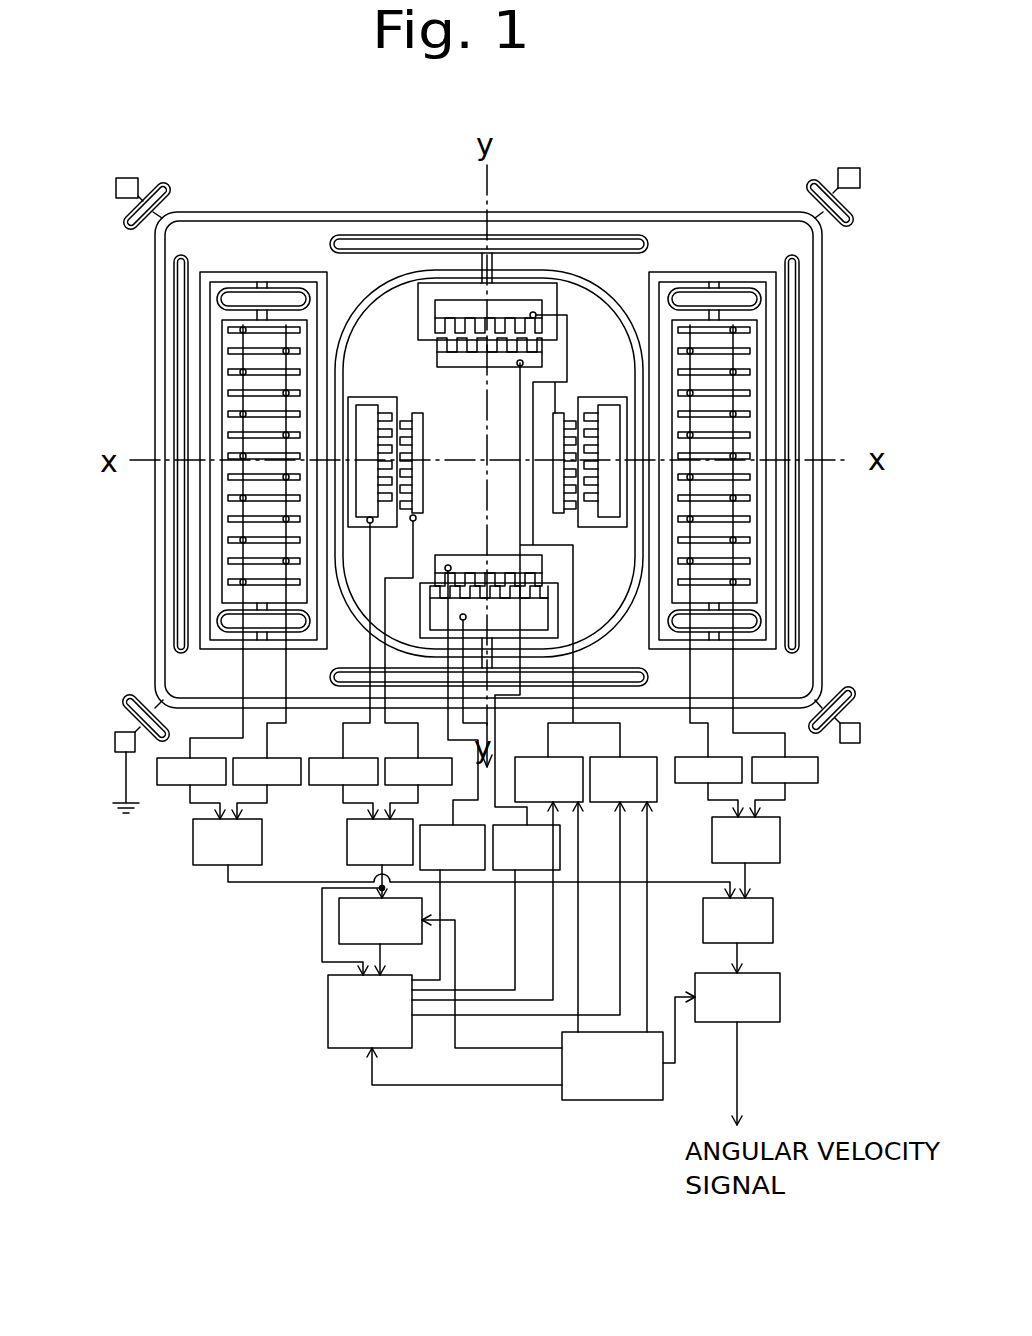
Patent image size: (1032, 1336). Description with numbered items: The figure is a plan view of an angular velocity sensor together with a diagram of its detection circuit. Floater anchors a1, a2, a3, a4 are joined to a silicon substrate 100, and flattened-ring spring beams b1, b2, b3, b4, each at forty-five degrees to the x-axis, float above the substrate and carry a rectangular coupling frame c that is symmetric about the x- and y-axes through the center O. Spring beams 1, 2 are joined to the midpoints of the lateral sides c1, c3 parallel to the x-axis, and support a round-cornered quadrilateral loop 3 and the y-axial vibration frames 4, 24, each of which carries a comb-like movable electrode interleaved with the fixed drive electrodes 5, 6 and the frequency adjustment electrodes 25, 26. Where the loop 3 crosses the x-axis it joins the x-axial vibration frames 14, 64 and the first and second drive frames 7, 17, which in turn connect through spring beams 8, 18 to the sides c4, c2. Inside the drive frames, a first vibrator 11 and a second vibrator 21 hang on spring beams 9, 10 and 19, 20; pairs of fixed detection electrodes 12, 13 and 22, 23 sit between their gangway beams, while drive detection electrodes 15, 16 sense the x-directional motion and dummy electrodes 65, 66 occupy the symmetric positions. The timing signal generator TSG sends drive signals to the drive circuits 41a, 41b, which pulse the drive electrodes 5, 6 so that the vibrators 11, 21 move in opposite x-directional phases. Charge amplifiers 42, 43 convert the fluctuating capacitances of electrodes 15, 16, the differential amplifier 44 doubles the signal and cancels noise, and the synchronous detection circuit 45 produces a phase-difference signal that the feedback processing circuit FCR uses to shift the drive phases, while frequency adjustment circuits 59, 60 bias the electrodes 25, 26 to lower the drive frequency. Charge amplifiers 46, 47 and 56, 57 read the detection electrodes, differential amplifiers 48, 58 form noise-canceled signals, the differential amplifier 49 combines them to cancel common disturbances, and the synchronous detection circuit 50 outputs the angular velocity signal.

The spring beam 1 is at (640, 228).
The silicon substrate 100 is at (178, 668).
The spring beam 2 is at (614, 669).
The quadrilateral loop 3 is at (384, 274).
The y-axial vibration frame 4 is at (552, 300).
The drive electrode 5 is at (440, 300).
The drive electrode 6 is at (487, 345).
The first drive frame 7 is at (698, 286).
The spring beam 8 is at (800, 266).
The spring beam 9 is at (740, 292).
The spring beam 10 is at (752, 612).
The first vibrator 11 is at (670, 322).
The fixed detection electrode 12 is at (740, 376).
The fixed detection electrode 13 is at (746, 356).
The x-axial vibration frame 14 is at (397, 406).
The drive detection electrode 15 is at (423, 425).
The drive detection electrode 16 is at (358, 397).
The second drive frame 17 is at (275, 282).
The spring beam 18 is at (178, 275).
The spring beam 19 is at (238, 294).
The spring beam 20 is at (232, 612).
The second vibrator 21 is at (303, 322).
The fixed detection electrode 22 is at (236, 380).
The fixed detection electrode 23 is at (234, 364).
The y-axial vibration frame 24 is at (424, 596).
The frequency adjustment electrode 25 is at (548, 620).
The frequency adjustment electrode 26 is at (542, 565).
The x-axial vibration frame 64 is at (560, 412).
The dummy electrode 65 is at (567, 340).
The dummy electrode 66 is at (607, 412).
The drive circuit 41a is at (622, 757).
The drive circuit 41b is at (560, 757).
The charge amplifier 42 is at (393, 786).
The charge amplifier 43 is at (326, 785).
The differential amplifier 44 is at (347, 847).
The synchronous detection circuit 45 is at (339, 930).
The charge amplifier 46 is at (805, 783).
The charge amplifier 47 is at (700, 783).
The differential amplifier 48 is at (780, 850).
The differential amplifier 49 is at (773, 920).
The synchronous detection circuit 50 is at (780, 997).
The charge amplifier 56 is at (172, 785).
The charge amplifier 57 is at (240, 757).
The differential amplifier 58 is at (193, 852).
The frequency adjustment circuit 59 is at (535, 871).
The frequency adjustment circuit 60 is at (465, 871).
The floater anchor a1 is at (852, 168).
The floater anchor a2 is at (128, 178).
The floater anchor a3 is at (860, 733).
The floater anchor a4 is at (115, 742).
The spring beam b1 is at (812, 184).
The spring beam b2 is at (160, 186).
The spring beam b3 is at (856, 692).
The spring beam b4 is at (122, 702).
The coupling frame c is at (513, 232).
The lateral side c1 is at (604, 238).
The lateral side c2 is at (160, 517).
The lateral side c3 is at (497, 705).
The lateral side c4 is at (822, 497).
The center O is at (487, 462).
The feedback processing circuit FCR is at (334, 1050).
The timing signal generator TSG is at (603, 1100).